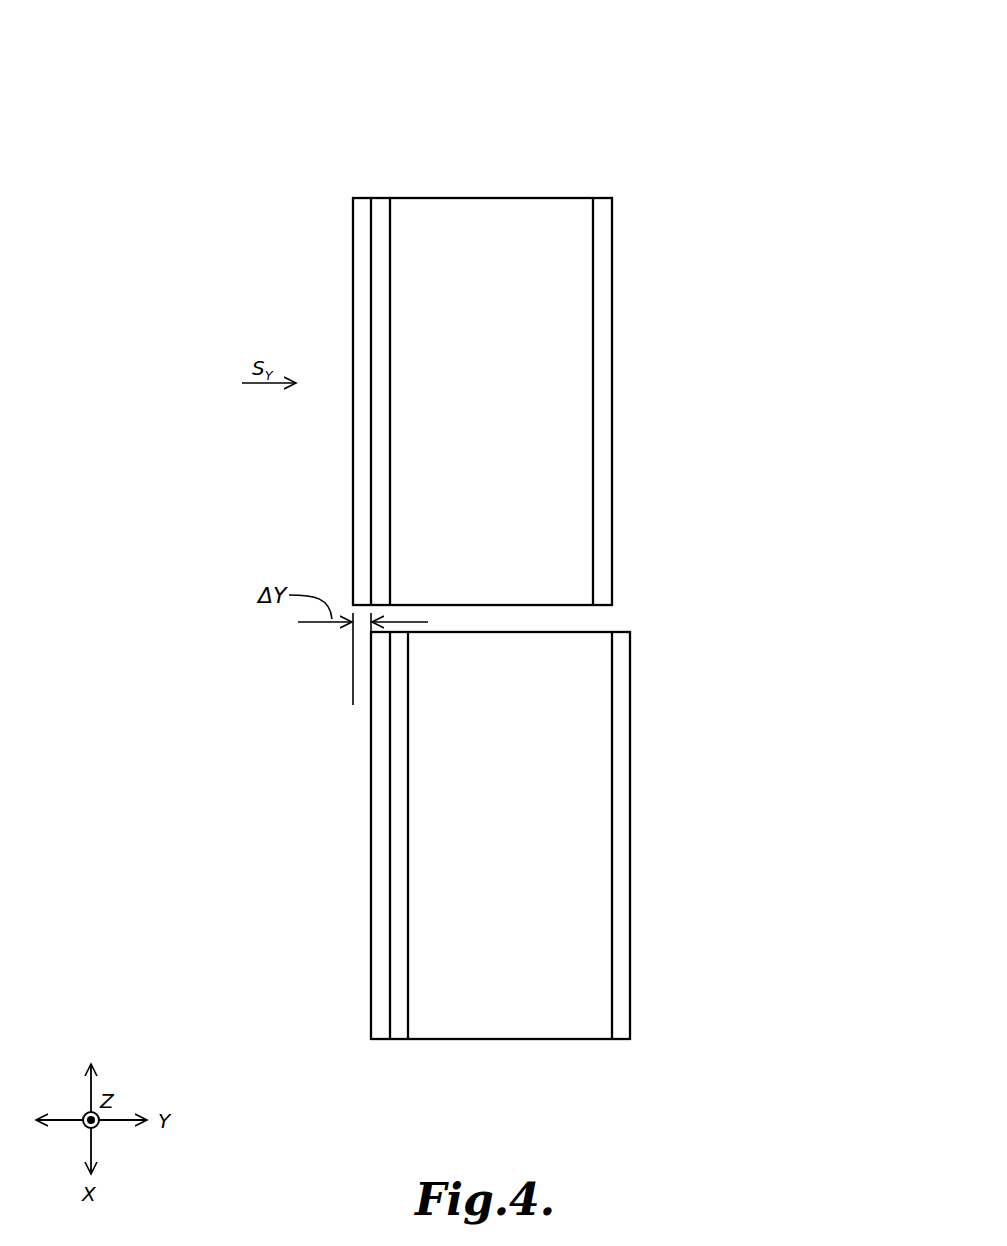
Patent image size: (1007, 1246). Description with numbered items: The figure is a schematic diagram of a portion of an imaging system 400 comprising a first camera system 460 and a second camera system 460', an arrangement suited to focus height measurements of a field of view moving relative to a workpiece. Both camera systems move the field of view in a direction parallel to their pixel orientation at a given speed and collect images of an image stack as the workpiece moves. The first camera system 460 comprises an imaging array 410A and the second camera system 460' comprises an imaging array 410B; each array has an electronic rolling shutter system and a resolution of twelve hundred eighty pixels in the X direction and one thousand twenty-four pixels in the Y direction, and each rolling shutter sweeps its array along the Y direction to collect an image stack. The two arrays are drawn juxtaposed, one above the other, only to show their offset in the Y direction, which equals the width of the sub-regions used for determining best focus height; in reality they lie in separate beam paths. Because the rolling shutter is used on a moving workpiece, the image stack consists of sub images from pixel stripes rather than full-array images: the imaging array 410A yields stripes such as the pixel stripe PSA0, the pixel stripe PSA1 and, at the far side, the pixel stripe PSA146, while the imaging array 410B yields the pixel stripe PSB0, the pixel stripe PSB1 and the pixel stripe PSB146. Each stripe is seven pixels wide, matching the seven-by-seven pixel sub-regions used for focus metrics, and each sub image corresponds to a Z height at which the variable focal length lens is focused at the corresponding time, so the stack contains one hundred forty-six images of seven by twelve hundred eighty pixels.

The imaging system 400 is at (764, 69).
The first camera system 460 is at (537, 366).
The second camera system 460' is at (571, 848).
The imaging array 410A is at (623, 271).
The imaging array 410B is at (644, 739).
The pixel stripe PSA0 is at (362, 248).
The pixel stripe PSA1 is at (382, 282).
The pixel stripe PSA146 is at (600, 295).
The pixel stripe PSB0 is at (378, 755).
The pixel stripe PSB1 is at (400, 793).
The pixel stripe PSB146 is at (618, 835).